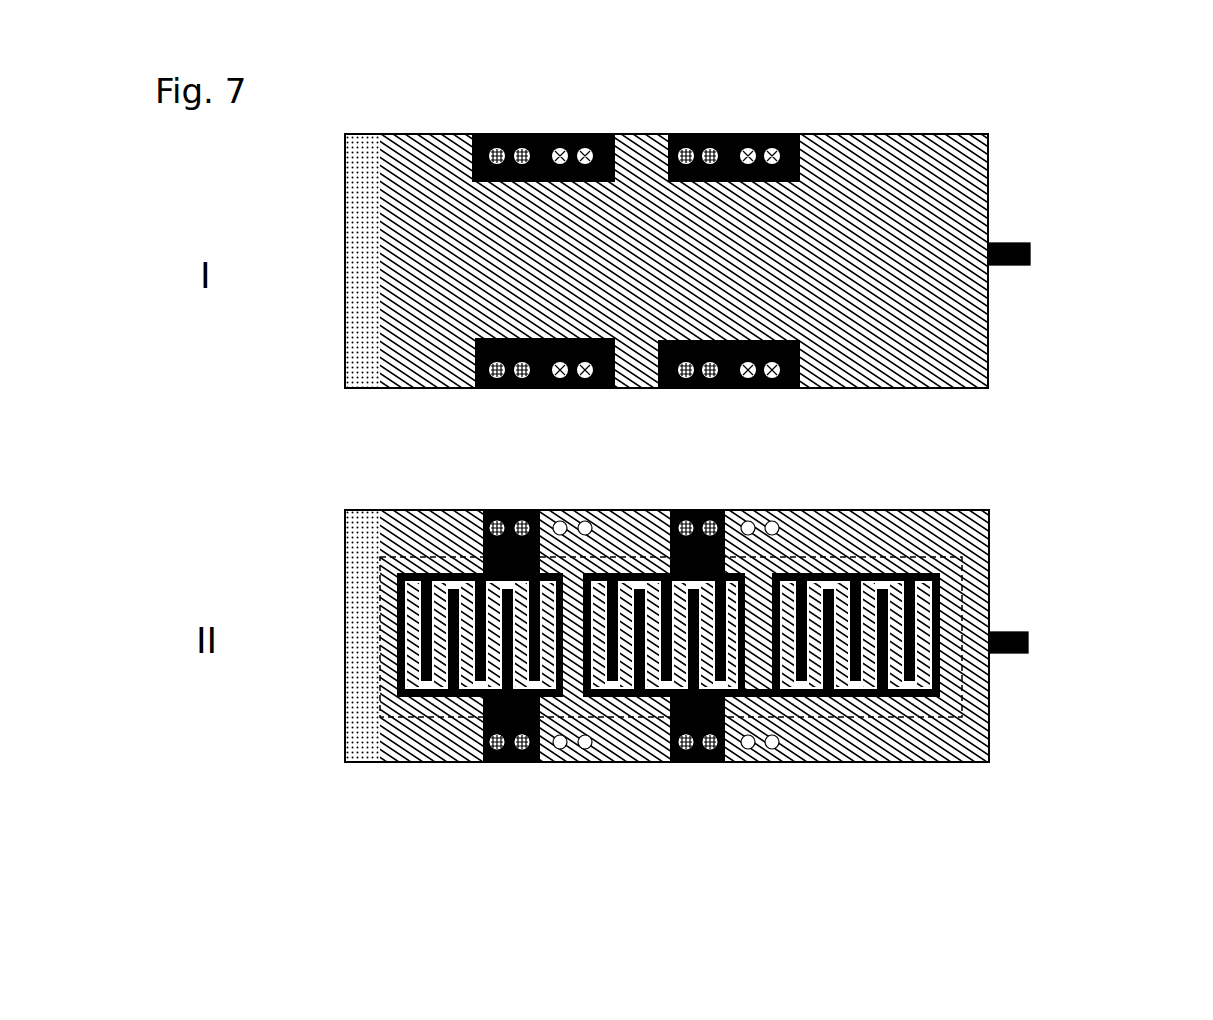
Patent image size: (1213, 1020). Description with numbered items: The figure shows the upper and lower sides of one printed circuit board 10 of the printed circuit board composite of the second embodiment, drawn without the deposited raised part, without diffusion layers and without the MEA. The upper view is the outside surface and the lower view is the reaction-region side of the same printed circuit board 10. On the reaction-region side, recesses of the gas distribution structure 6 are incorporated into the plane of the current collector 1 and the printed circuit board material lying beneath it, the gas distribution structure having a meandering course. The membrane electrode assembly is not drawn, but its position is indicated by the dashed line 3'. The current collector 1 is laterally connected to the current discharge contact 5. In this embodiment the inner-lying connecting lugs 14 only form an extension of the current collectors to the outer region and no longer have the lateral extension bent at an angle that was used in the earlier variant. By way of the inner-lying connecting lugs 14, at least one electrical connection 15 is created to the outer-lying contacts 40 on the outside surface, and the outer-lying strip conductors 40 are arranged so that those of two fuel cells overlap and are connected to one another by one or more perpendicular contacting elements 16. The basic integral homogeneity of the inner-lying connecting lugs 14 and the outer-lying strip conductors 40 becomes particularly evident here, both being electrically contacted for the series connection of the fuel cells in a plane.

The current collector 1 is at (621, 652).
The dashed line indicating MEA position 3' is at (671, 572).
The current discharge contact 5 is at (1015, 642).
The gas distribution structure 6 is at (421, 591).
The printed circuit board 10 is at (962, 294).
The inner-lying connecting lugs 14 is at (666, 764).
The electrical connection 15 is at (523, 380).
The perpendicular contacting elements 16 is at (771, 380).
The outer-lying strip conductors 40 is at (720, 130).